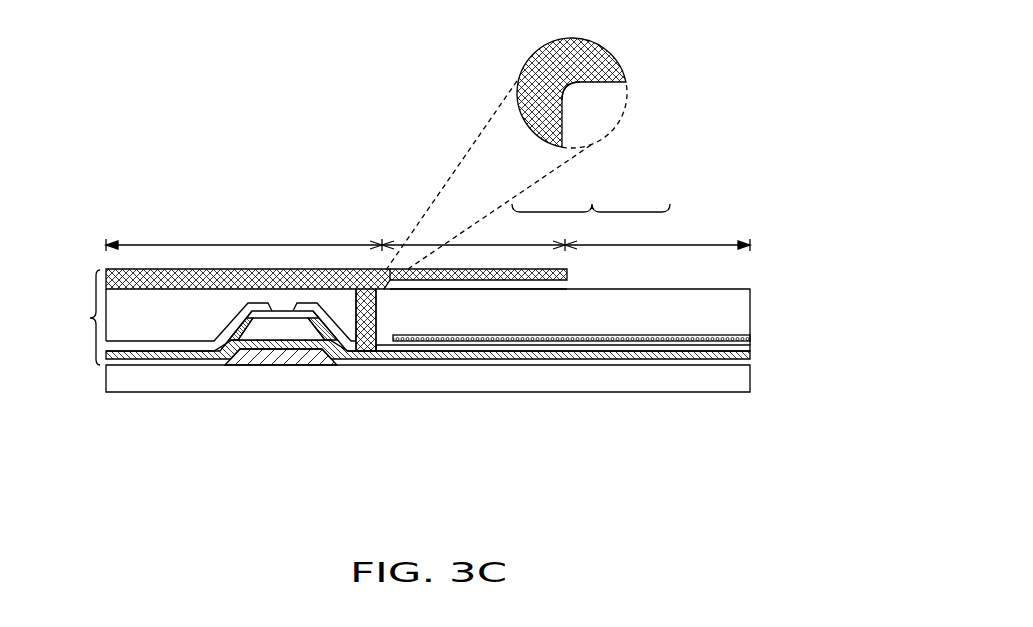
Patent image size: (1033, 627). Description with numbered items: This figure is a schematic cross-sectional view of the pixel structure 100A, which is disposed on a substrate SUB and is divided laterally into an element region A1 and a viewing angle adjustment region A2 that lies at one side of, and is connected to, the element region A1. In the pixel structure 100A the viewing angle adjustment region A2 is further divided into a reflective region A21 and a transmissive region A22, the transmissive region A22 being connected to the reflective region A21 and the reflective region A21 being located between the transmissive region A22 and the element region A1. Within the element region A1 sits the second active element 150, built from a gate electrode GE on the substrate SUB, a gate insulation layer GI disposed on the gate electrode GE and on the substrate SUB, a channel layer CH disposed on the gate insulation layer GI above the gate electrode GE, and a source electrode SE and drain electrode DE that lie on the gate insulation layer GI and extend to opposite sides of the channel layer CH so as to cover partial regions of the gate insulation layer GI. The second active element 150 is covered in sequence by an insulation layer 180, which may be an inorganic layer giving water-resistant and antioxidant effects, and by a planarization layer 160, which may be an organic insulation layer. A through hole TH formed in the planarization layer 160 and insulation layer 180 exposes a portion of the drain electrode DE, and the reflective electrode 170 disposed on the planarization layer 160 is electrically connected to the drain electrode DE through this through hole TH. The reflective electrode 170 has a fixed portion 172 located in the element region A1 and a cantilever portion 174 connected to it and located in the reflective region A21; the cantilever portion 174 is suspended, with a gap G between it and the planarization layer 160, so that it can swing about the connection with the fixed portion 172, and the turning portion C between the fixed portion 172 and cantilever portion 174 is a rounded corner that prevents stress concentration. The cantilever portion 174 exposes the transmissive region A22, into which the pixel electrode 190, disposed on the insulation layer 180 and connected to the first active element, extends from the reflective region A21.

The pixel structure 100A is at (65, 317).
The second active element 150 is at (428, 405).
The source electrode SE is at (189, 350).
The gate electrode GE is at (262, 355).
The channel layer CH is at (283, 327).
The drain electrode DE is at (324, 379).
The gate insulation layer GI is at (392, 360).
The substrate SUB is at (732, 381).
The planarization layer 160 is at (733, 312).
The reflective electrode 170 is at (388, 189).
The fixed portion 172 is at (372, 270).
The cantilever portion 174 is at (410, 268).
The insulation layer 180 is at (735, 346).
The pixel electrode 190 is at (580, 346).
The through hole TH is at (357, 308).
The gap G is at (553, 286).
The turning portion C is at (571, 93).
The element region A1 is at (244, 231).
The viewing angle adjustment region A2 is at (591, 192).
The reflective region A21 is at (473, 230).
The transmissive region A22 is at (657, 230).